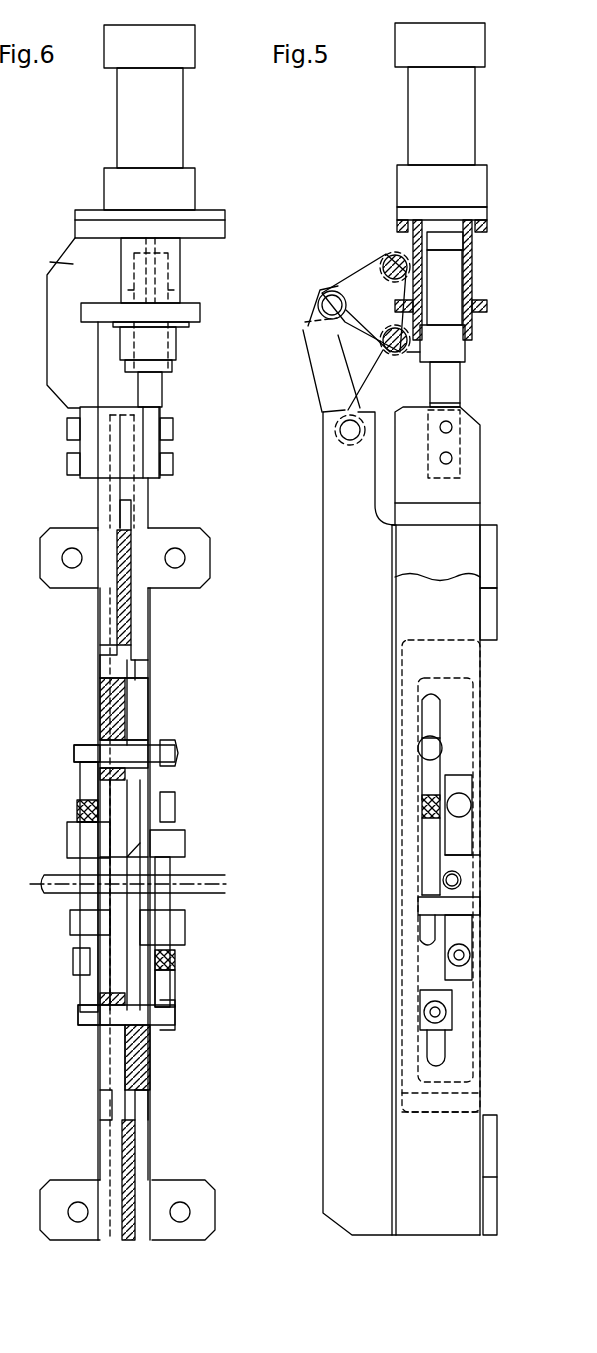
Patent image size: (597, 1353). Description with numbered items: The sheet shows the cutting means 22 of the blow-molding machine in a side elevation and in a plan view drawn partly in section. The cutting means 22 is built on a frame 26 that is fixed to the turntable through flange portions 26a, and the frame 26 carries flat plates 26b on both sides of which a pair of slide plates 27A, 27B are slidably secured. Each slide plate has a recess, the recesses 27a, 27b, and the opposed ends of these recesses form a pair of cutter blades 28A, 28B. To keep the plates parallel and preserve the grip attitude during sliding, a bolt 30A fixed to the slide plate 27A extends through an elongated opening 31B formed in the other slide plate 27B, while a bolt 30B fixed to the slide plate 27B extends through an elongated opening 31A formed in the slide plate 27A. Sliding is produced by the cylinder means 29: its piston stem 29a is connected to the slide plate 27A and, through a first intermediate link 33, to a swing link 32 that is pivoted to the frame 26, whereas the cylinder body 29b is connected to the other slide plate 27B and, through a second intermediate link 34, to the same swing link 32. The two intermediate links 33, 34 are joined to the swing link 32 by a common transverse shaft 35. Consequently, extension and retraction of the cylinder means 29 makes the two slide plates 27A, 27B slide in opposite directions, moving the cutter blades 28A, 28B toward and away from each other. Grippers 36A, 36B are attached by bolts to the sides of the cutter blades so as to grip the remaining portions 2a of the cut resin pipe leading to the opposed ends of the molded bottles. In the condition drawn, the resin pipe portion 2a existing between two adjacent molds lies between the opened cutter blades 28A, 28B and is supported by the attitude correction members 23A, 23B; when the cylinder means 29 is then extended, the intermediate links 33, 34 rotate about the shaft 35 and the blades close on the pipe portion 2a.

In FIG. 6, the resin pipe portion 2a is at (205, 897).
In FIG. 5, the resin pipe portion 2a is at (462, 880).
In FIG. 6, the cutting means 22 is at (233, 768).
In FIG. 5, the cutting means 22 is at (537, 765).
In FIG. 6, the attitude correction member 23A is at (170, 870).
In FIG. 6, the attitude correction member 23B is at (85, 870).
In FIG. 5, the attitude correction member 23B is at (428, 885).
In FIG. 5, the frame 26 is at (330, 642).
In FIG. 6, the flange portion 26a is at (190, 578).
In FIG. 5, the flange portion 26a is at (490, 612).
In FIG. 6, the flat plate 26b is at (125, 620).
In FIG. 5, the flat plate 26b is at (468, 553).
In FIG. 6, the recess 27a is at (126, 508).
In FIG. 6, the recess 27b is at (120, 665).
In FIG. 6, the slide plate 27A is at (140, 668).
In FIG. 5, the slide plate 27A is at (470, 513).
In FIG. 6, the slide plate 27B is at (100, 668).
In FIG. 5, the slide plate 27B is at (465, 660).
In FIG. 6, the cutter blade 28A is at (170, 848).
In FIG. 5, the cutter blade 28A is at (470, 860).
In FIG. 6, the cutter blade 28B is at (75, 930).
In FIG. 5, the cutter blade 28B is at (468, 905).
In FIG. 6, the cylinder means 29 is at (103, 190).
In FIG. 5, the cylinder means 29 is at (395, 175).
In FIG. 6, the piston stem 29a is at (155, 388).
In FIG. 5, the piston stem 29a is at (445, 278).
In FIG. 6, the cylinder body 29b is at (172, 128).
In FIG. 5, the cylinder body 29b is at (470, 125).
In FIG. 6, the bolt 30A is at (78, 1020).
In FIG. 5, the bolt 30A is at (446, 1012).
In FIG. 6, the bolt 30B is at (178, 755).
In FIG. 5, the bolt 30B is at (440, 752).
In FIG. 6, the elongated opening 31A is at (135, 705).
In FIG. 5, the elongated opening 31A is at (442, 708).
In FIG. 6, the elongated opening 31B is at (140, 1045).
In FIG. 5, the elongated opening 31B is at (436, 1048).
In FIG. 5, the swing link 32 is at (320, 380).
In FIG. 5, the first intermediate link 33 is at (367, 330).
In FIG. 5, the second intermediate link 34 is at (362, 275).
In FIG. 5, the common transverse shaft 35 is at (322, 300).
In FIG. 6, the gripper 36A is at (75, 840).
In FIG. 5, the gripper 36A is at (460, 845).
In FIG. 6, the gripper 36B is at (75, 950).
In FIG. 5, the gripper 36B is at (462, 925).